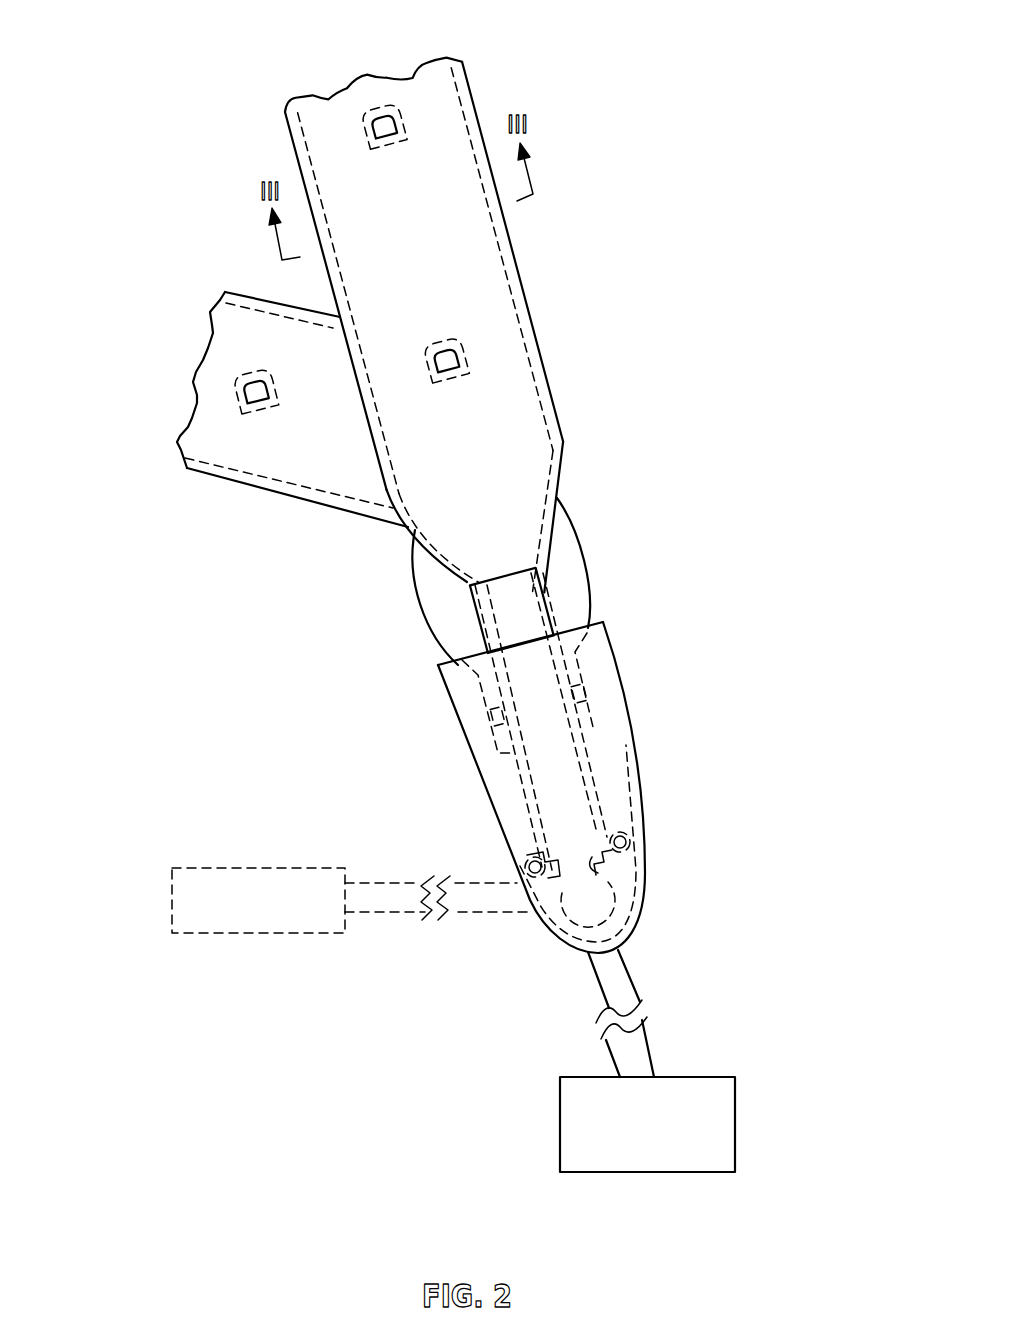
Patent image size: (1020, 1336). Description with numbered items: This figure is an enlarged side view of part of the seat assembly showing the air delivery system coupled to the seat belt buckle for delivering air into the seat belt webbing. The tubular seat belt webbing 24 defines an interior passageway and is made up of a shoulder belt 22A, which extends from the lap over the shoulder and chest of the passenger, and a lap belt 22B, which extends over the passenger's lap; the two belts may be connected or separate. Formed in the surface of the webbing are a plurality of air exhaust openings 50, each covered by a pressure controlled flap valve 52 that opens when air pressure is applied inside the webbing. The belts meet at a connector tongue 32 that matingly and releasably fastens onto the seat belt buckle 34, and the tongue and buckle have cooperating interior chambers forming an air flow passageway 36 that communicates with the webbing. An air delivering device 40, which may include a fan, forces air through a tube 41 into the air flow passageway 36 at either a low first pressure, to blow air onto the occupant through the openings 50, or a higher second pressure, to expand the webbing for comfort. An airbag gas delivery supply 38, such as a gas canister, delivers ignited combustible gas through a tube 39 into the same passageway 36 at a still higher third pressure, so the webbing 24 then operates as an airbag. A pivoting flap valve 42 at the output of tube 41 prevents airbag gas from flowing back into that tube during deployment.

The shoulder belt 22A is at (328, 133).
The lap belt 22B is at (303, 457).
The tubular seat belt webbing 24 is at (527, 433).
The connector tongue 32 is at (528, 618).
The seat belt buckle 34 is at (610, 750).
The air flow passageway 36 is at (565, 805).
The airbag gas delivery supply 38 is at (170, 882).
The tube 39 is at (393, 882).
The air delivering device 40 is at (560, 1105).
The tube 41 is at (630, 975).
The pivoting flap valve 42 is at (607, 897).
The air exhaust openings 50 is at (380, 126).
The flap valve 52 is at (410, 117).